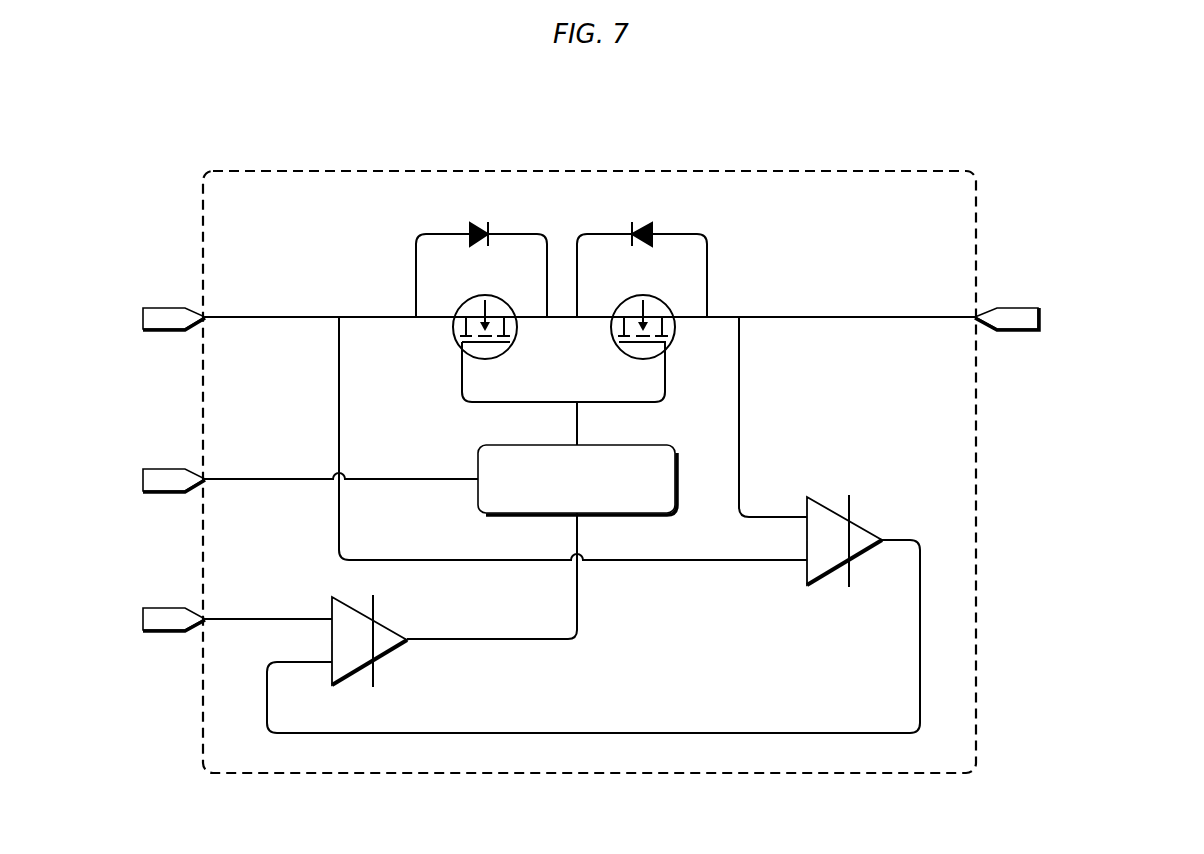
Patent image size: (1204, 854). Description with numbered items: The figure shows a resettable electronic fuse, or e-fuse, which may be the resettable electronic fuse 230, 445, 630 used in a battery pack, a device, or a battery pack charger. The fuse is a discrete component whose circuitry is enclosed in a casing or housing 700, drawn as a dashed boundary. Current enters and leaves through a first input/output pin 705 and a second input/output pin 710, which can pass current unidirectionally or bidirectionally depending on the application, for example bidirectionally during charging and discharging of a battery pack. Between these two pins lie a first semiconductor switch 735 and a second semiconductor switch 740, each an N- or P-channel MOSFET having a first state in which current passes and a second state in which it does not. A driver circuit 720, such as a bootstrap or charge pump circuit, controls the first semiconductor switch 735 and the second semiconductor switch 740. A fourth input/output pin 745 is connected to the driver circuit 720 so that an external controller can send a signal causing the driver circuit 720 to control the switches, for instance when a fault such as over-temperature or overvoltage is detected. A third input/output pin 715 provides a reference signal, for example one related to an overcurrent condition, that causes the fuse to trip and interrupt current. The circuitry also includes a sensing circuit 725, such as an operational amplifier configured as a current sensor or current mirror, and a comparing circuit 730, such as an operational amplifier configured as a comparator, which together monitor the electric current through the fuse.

The resettable electronic fuse 230 is at (981, 74).
The resettable electronic fuse 445 is at (590, 472).
The resettable electronic fuse 630 is at (590, 472).
The housing 700 is at (976, 243).
The first input/output pin 705 is at (143, 318).
The second input/output pin 710 is at (1038, 318).
The third input/output pin 715 is at (143, 619).
The driver circuit 720 is at (482, 448).
The sensing circuit 725 is at (857, 520).
The comparing circuit 730 is at (392, 650).
The first semiconductor switch 735 is at (455, 305).
The second semiconductor switch 740 is at (672, 305).
The fourth input/output pin 745 is at (143, 479).